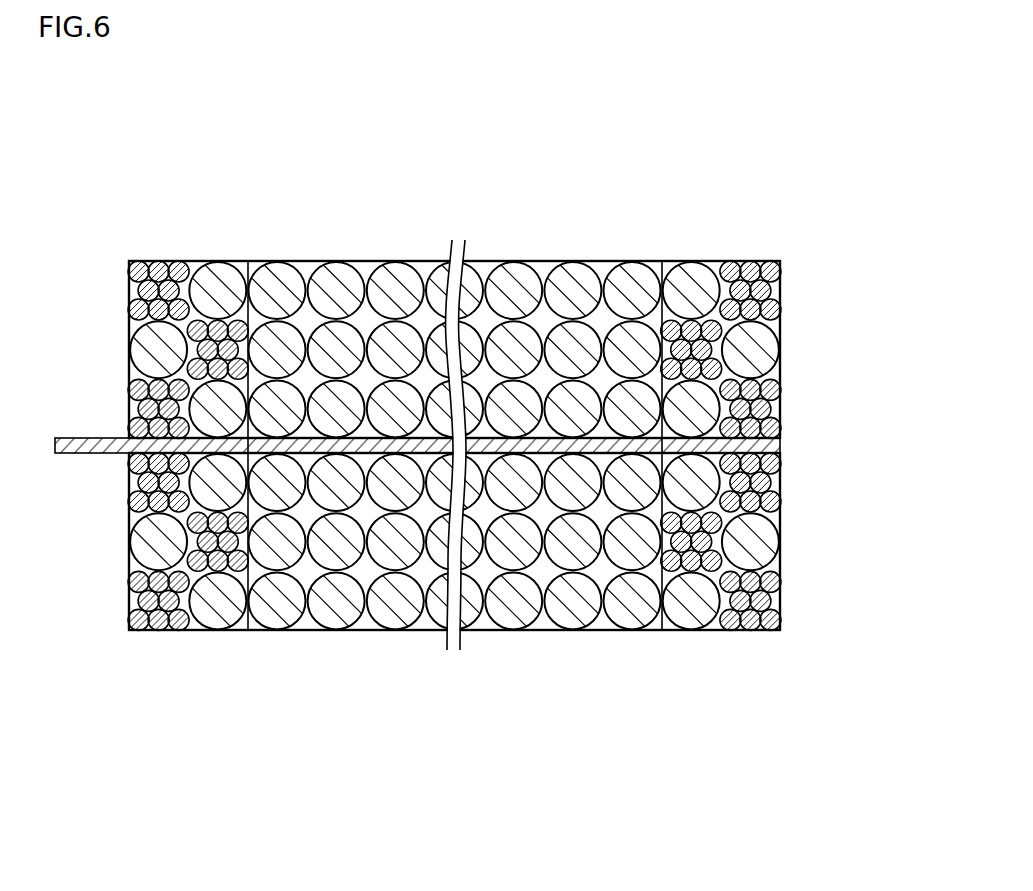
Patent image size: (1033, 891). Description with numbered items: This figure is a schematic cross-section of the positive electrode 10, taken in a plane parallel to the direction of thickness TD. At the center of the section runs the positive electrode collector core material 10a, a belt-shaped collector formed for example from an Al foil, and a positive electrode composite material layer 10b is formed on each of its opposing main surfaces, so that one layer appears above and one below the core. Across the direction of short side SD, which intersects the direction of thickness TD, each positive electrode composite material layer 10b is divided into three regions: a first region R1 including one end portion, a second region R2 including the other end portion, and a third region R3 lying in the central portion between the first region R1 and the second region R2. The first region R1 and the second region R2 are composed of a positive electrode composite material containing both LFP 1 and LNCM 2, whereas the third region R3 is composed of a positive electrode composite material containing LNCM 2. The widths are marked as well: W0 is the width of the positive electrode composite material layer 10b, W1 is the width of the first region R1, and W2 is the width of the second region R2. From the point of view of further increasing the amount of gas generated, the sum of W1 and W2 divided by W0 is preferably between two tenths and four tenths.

The positive electrode 10 is at (810, 110).
The positive electrode collector core material 10a is at (773, 445).
The positive electrode composite material layer 10b is at (745, 709).
The LFP 1 is at (770, 600).
The LNCM 2 is at (770, 543).
The first region R1 is at (190, 634).
The second region R2 is at (722, 634).
The third region R3 is at (368, 634).
The width of positive electrode composite material layer W0 is at (780, 258).
The width of first region W1 is at (248, 258).
The width of second region W2 is at (662, 258).
The direction of thickness TD is at (97, 805).
The direction of short side SD is at (148, 805).